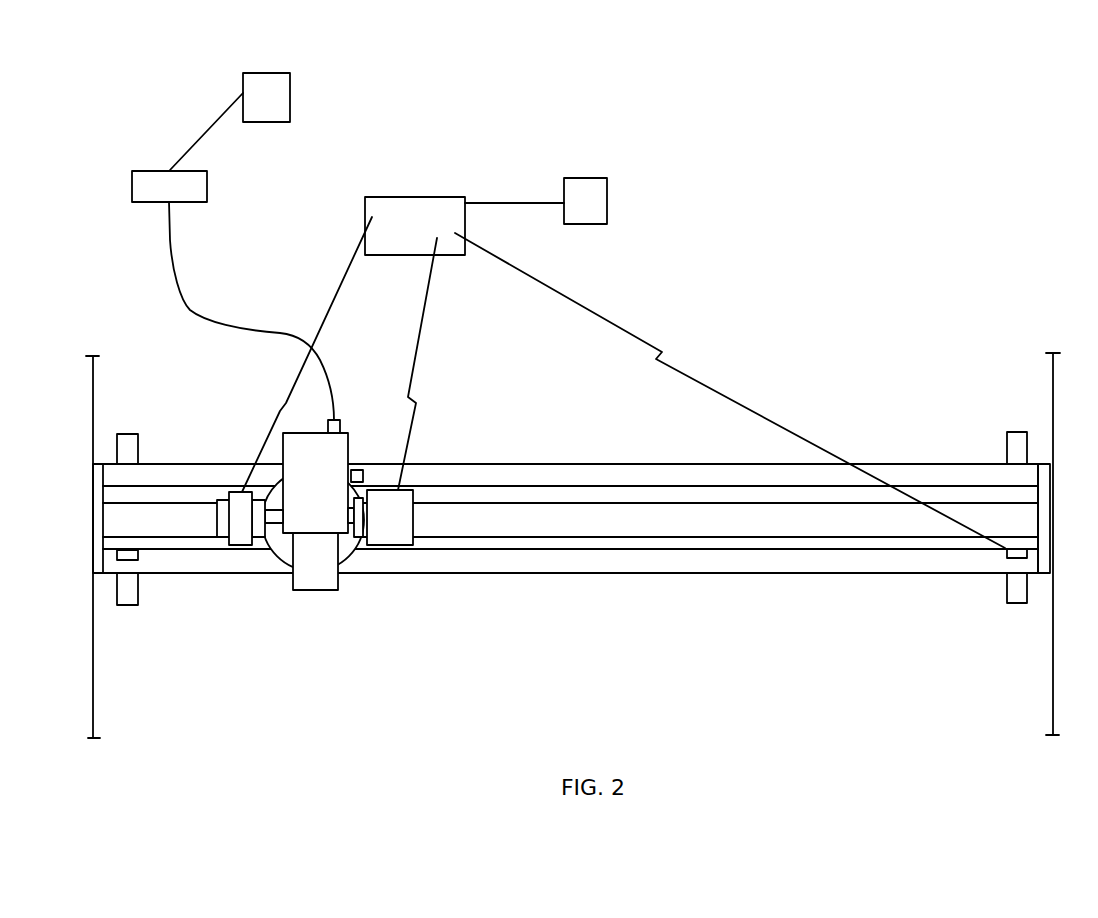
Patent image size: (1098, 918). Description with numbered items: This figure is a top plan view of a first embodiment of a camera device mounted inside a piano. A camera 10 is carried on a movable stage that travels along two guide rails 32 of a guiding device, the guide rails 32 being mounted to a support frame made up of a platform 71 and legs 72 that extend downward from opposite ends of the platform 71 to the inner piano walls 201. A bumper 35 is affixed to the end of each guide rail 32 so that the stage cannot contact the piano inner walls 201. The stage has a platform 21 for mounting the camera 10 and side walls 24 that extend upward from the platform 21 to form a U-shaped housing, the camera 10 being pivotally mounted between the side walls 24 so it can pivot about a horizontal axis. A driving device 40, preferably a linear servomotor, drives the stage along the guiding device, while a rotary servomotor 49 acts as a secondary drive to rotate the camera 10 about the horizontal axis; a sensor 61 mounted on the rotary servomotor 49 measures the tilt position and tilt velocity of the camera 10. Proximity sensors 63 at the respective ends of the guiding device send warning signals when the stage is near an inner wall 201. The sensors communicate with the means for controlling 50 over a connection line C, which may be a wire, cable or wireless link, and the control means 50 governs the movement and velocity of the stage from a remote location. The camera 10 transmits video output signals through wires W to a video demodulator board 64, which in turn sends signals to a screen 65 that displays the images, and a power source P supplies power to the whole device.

The camera 10 is at (358, 363).
The platform 21 is at (343, 568).
The side walls 24 is at (262, 525).
The guide rails 32 is at (700, 493).
The bumper 35 is at (1048, 549).
The driving device 40 is at (395, 530).
The rotary servomotor 49 is at (244, 500).
The means for controlling 50 is at (412, 205).
The sensor 61 is at (218, 508).
The proximity sensors 63 is at (133, 556).
The video demodulator board 64 is at (135, 190).
The screen 65 is at (282, 103).
The platform 71 is at (863, 552).
The legs 72 is at (130, 585).
The inner piano walls 201 is at (93, 408).
The wires W is at (170, 241).
The connection line C is at (336, 290).
The power source P is at (536, 201).